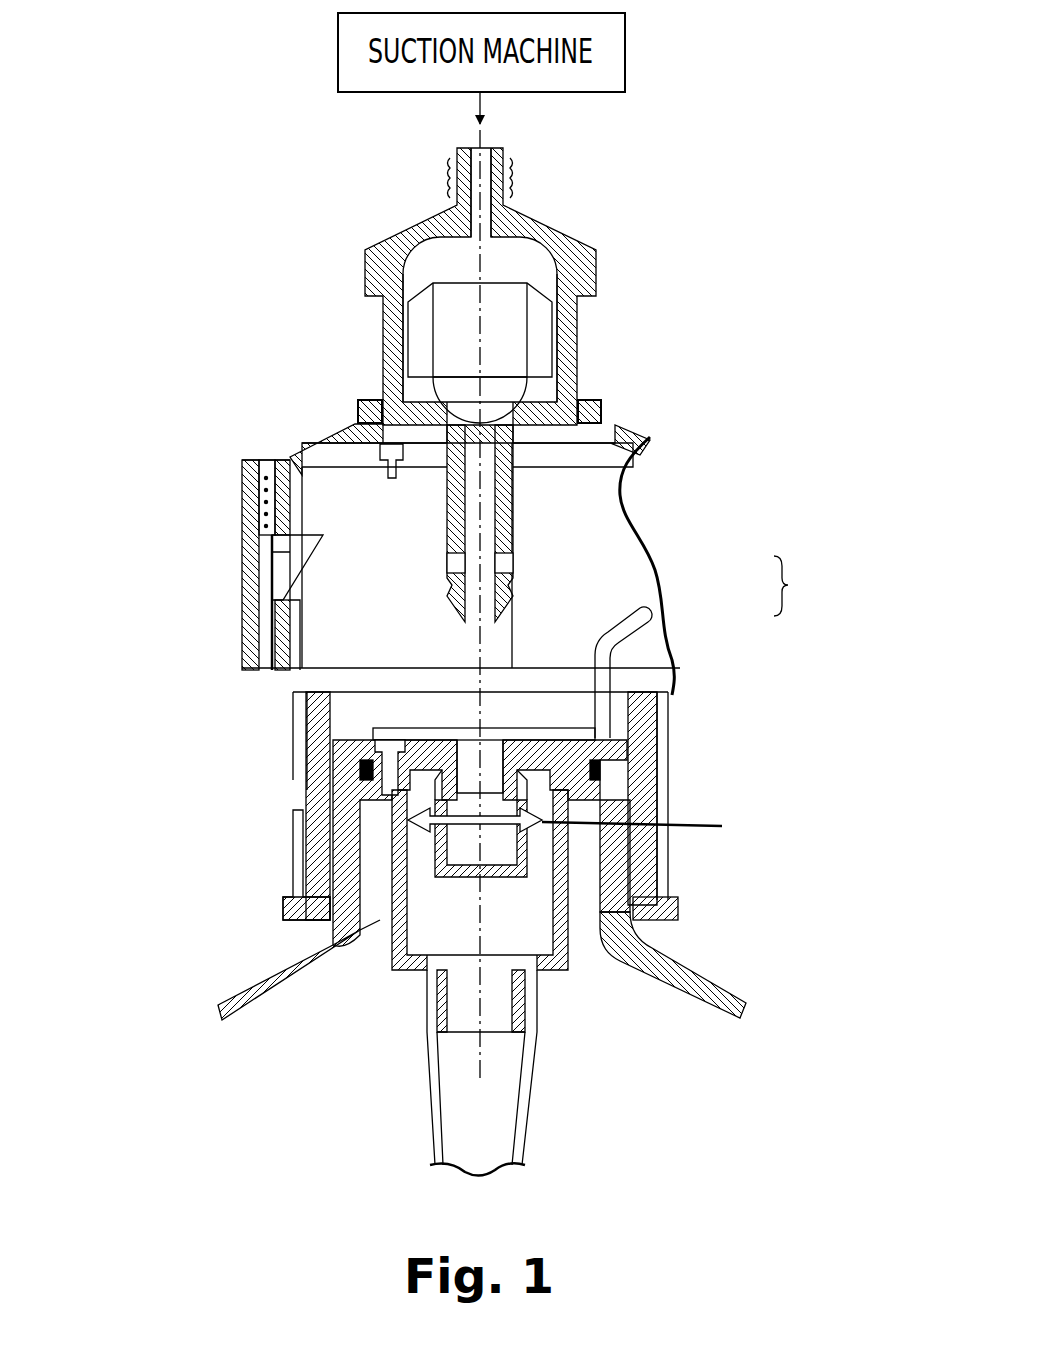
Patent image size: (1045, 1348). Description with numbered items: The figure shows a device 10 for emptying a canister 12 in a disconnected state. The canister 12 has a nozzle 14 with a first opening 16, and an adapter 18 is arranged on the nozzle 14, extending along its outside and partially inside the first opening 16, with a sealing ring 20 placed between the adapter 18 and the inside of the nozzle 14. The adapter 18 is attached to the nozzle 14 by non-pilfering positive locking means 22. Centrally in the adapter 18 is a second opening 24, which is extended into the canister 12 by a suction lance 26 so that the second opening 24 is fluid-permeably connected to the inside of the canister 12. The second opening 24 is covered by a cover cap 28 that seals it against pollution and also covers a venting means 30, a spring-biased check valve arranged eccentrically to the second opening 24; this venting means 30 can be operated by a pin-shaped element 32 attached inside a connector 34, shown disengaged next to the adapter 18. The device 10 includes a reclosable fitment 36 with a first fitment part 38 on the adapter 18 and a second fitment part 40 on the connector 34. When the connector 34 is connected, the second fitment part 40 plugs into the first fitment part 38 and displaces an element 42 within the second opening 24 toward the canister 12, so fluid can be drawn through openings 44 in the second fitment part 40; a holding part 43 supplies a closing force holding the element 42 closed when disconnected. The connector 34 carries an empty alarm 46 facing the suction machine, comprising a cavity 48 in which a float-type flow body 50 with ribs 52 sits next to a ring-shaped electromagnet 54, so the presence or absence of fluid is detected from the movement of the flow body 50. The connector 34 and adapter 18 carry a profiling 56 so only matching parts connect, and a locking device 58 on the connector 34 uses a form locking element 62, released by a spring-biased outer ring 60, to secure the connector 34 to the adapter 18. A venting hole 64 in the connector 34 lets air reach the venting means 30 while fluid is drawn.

The device 10 is at (638, 152).
The canister 12 is at (745, 1011).
The nozzle 14 is at (630, 840).
The first opening 16 is at (375, 925).
The adapter 18 is at (650, 733).
The sealing ring 20 is at (645, 785).
The positive locking means 22 is at (640, 887).
The second opening 24 is at (428, 940).
The suction lance 26 is at (520, 1120).
The cover cap 28 is at (640, 690).
The venting means 30 is at (318, 795).
The pin-shaped element 32 is at (325, 458).
The connector 34 is at (650, 440).
The reclosable fitment 36 is at (795, 586).
The first fitment part 38 is at (665, 690).
The second fitment part 40 is at (515, 525).
The element 42 is at (412, 870).
The holding part 43 is at (582, 828).
The openings 44 is at (447, 567).
The empty alarm 46 is at (350, 322).
The cavity 48 is at (440, 260).
The flow body 50 is at (500, 300).
The ribs 52 is at (540, 325).
The ring-shaped electromagnet 54 is at (360, 405).
The profiling 56 is at (272, 655).
The locking device 58 is at (203, 553).
The outer ring 60 is at (250, 615).
The form locking element 62 is at (262, 520).
The venting hole 64 is at (380, 447).